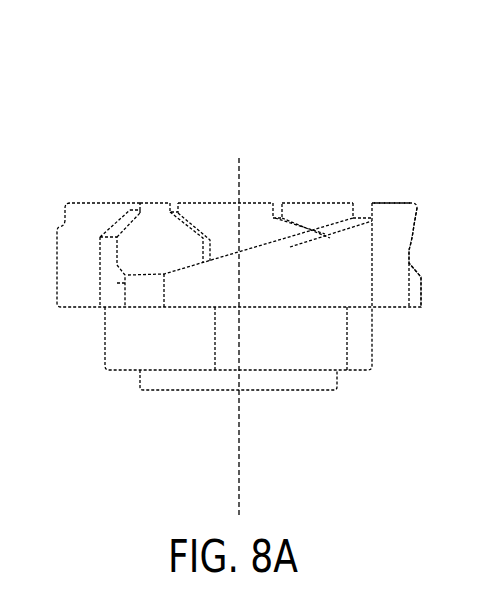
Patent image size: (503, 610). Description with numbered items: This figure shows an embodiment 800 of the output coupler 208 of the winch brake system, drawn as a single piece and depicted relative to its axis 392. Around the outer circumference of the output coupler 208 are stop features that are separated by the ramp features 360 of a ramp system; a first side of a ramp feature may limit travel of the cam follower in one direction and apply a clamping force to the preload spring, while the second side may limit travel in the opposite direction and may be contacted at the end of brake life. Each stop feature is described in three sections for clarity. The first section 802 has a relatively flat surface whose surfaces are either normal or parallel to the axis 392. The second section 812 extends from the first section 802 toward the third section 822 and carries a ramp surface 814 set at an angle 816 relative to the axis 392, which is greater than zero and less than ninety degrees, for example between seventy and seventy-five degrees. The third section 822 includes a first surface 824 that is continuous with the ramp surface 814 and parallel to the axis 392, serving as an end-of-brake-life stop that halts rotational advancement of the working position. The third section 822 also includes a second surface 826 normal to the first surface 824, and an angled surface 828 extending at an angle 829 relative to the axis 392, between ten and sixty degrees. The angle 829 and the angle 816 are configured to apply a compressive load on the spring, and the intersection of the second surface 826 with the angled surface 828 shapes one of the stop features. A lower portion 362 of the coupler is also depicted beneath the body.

The embodiment of the output coupler 800 is at (360, 93).
The output coupler 208 is at (313, 162).
The ramp features 360 is at (338, 277).
The lower housing portion 362 is at (287, 372).
The axis 392 is at (238, 441).
The first section 802 is at (133, 297).
The second section 812 is at (304, 298).
The ramp surface 814 is at (222, 258).
The angle 816 is at (248, 254).
The third section 822 is at (118, 204).
The first surface 824 is at (362, 207).
The second surface 826 is at (410, 208).
The angled surface 828 is at (117, 228).
The angle 829 is at (135, 218).